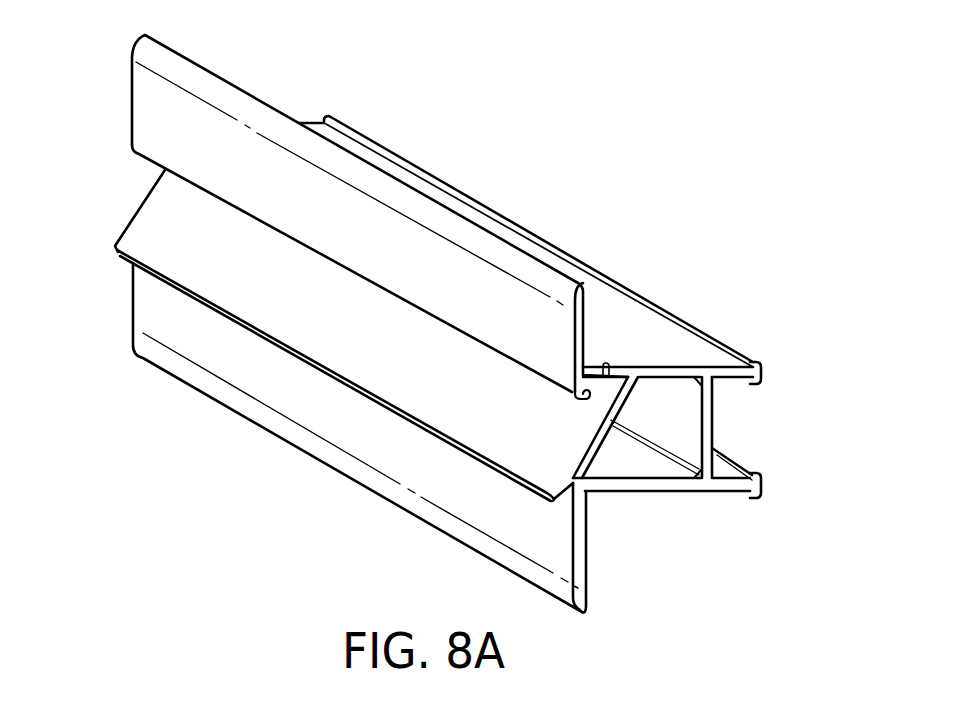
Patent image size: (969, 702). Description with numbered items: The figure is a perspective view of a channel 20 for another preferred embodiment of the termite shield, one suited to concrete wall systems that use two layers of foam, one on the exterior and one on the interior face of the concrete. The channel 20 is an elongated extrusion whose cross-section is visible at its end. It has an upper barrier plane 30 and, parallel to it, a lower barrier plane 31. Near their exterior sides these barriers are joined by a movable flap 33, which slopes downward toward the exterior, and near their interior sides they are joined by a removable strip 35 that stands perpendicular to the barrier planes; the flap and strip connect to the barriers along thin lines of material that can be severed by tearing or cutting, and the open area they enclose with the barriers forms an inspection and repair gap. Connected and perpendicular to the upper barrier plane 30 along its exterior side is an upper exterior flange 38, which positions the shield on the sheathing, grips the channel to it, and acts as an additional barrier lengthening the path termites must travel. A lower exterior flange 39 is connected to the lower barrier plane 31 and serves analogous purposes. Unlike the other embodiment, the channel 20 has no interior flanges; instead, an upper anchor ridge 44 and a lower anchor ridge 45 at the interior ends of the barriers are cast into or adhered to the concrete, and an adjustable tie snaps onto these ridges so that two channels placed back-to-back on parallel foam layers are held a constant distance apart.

The channel 20 is at (156, 442).
The upper barrier plane 30 is at (663, 370).
The lower barrier plane 31 is at (653, 494).
The movable flap 33 is at (147, 208).
The removable strip 35 is at (714, 428).
The upper exterior flange 38 is at (140, 104).
The lower exterior flange 39 is at (133, 303).
The upper anchor ridge 44 is at (761, 367).
The lower anchor ridge 45 is at (761, 488).